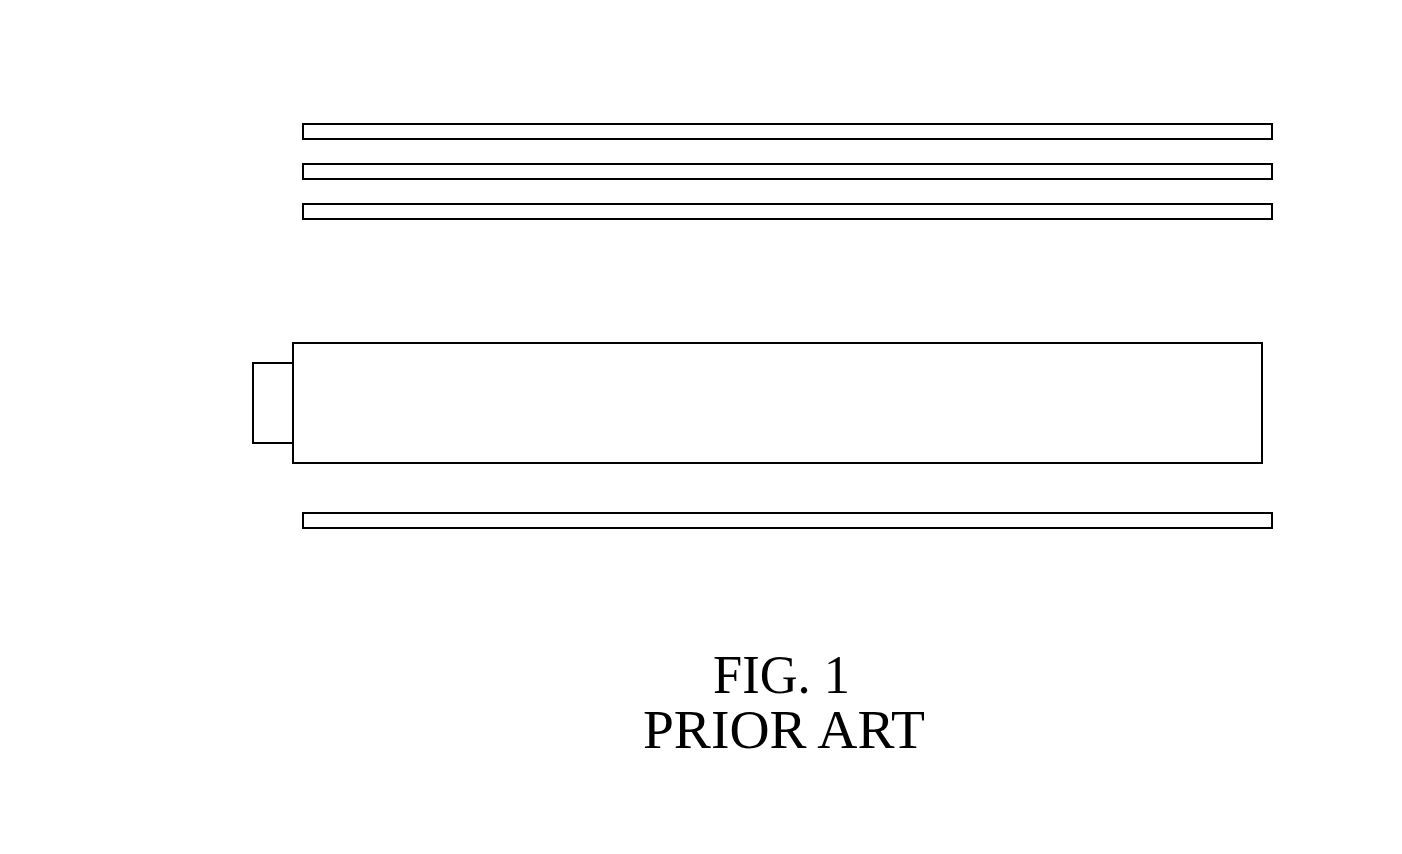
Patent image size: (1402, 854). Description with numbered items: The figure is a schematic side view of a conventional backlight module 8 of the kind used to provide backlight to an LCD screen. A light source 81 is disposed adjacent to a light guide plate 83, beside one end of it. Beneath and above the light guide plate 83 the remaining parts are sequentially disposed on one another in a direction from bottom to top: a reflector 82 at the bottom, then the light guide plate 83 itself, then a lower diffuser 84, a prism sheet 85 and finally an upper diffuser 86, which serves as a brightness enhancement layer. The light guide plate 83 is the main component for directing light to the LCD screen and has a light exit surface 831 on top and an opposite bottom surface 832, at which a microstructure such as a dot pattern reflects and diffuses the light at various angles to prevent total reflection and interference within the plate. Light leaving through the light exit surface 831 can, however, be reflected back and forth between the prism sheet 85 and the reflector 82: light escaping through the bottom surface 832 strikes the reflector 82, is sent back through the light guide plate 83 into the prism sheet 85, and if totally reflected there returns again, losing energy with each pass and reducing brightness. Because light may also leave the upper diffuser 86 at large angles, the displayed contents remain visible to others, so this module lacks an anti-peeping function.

The conventional backlight module 8 is at (263, 100).
The light source 81 is at (253, 400).
The reflector 82 is at (1272, 520).
The light guide plate 83 is at (1262, 402).
The light exit surface 831 is at (1207, 343).
The bottom surface 832 is at (1217, 463).
The lower diffuser 84 is at (1272, 212).
The prism sheet 85 is at (1272, 172).
The upper diffuser 86 is at (1272, 132).